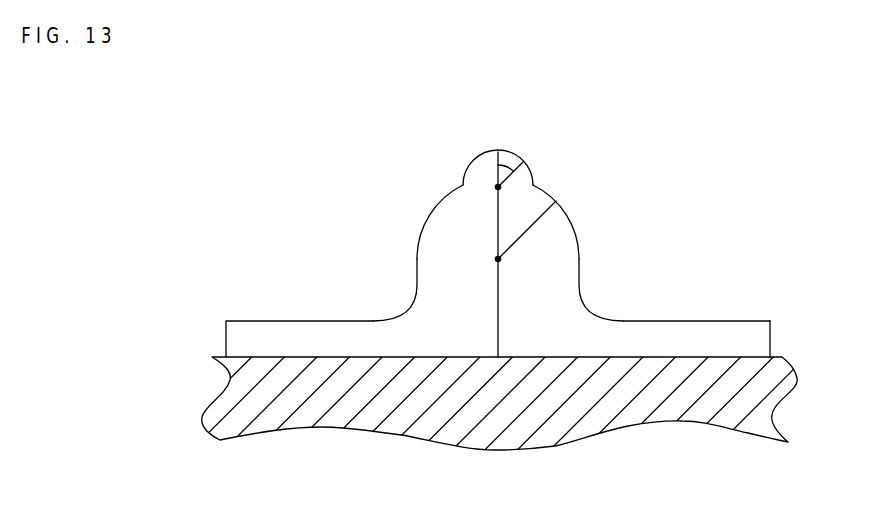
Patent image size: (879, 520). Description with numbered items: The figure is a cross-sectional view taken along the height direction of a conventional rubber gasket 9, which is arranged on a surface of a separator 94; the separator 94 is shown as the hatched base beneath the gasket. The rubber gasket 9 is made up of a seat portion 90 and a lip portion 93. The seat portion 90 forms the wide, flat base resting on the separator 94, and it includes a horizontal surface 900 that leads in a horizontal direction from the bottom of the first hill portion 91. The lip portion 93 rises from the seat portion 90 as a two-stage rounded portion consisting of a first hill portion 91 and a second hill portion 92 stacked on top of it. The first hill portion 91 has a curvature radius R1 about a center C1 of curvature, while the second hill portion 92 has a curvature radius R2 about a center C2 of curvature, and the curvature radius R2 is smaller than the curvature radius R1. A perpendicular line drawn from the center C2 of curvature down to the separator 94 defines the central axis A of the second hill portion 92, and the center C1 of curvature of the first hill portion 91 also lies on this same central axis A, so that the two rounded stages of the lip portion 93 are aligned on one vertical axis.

The rubber gasket 9 is at (495, 222).
The seat portion 90 is at (495, 306).
The horizontal surface 900 is at (696, 290).
The first hill portion 91 is at (437, 221).
The second hill portion 92 is at (464, 136).
The lip portion 93 is at (534, 270).
The separator 94 is at (479, 416).
The central axis A is at (520, 141).
The curvature radius of first hill portion R1 is at (583, 219).
The curvature radius of second hill portion R2 is at (543, 166).
The center of curvature of first hill portion C1 is at (428, 245).
The center of curvature of second hill portion C2 is at (440, 177).